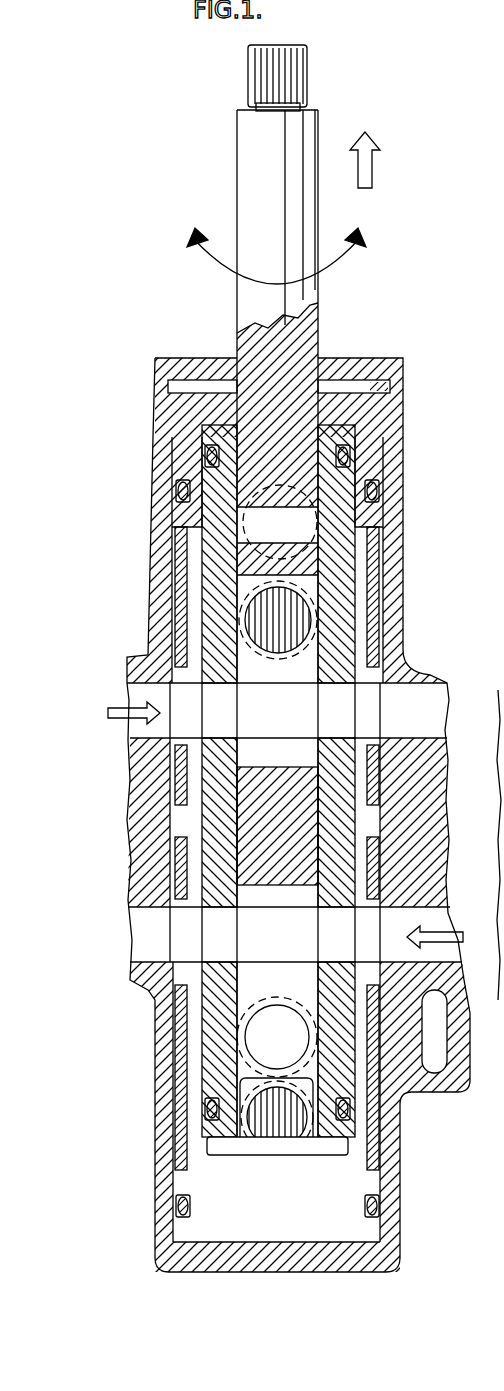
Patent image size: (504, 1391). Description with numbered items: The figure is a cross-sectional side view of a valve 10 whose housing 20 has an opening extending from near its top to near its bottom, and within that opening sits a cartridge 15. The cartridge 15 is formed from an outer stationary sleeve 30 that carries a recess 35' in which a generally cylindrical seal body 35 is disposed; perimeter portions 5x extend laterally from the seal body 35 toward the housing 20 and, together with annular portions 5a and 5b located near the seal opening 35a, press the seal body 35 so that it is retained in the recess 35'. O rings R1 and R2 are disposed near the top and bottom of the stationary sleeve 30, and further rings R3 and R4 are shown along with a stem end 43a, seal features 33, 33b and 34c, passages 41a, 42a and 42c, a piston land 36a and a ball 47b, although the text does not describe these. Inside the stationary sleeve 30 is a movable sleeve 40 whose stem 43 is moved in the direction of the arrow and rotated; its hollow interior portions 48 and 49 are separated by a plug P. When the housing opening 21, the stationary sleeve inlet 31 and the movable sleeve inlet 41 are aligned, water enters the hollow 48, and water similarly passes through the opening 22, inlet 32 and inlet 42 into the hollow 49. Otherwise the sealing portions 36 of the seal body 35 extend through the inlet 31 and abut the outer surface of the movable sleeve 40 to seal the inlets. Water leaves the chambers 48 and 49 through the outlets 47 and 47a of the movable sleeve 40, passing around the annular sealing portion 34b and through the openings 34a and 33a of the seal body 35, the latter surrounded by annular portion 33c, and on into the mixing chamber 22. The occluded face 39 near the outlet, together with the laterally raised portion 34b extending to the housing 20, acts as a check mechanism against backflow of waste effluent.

The valve 10 is at (176, 256).
The cartridge 15 is at (176, 354).
The housing 20 is at (155, 412).
The opening of the housing 21 is at (118, 697).
The opening of the housing 22 is at (150, 940).
The stationary sleeve 30 is at (372, 407).
The inlet of the stationary sleeve 31 is at (367, 713).
The inlet of the stationary sleeve 32 is at (400, 950).
The lower ball bearing 33 is at (205, 1160).
The opening of the seal 33a is at (265, 1060).
The bearing race 33b is at (255, 1090).
The annular portion 33c is at (278, 1130).
The opening of the seal 34a is at (290, 645).
The annular sealing portion 34b is at (242, 535).
The bearing race 34c is at (245, 615).
The cylindrical seal body 35 is at (391, 781).
The recess 35' is at (429, 521).
The opening of the seal 35a is at (395, 870).
The sealing portion 36 is at (425, 648).
The piston land 36a is at (277, 826).
The occluded face 39 is at (248, 592).
The movable sleeve 40 is at (378, 612).
The inlet of the movable sleeve 41 is at (334, 713).
The passage 41a is at (125, 736).
The inlet of the movable sleeve 42 is at (332, 940).
The passage 42a is at (150, 918).
The passage 42c is at (485, 1081).
The stem 43 is at (255, 152).
The splined end of shaft 43a is at (310, 72).
The outlet of the movable sleeve 47 is at (280, 522).
The outlet of the movable sleeve 47a is at (248, 1037).
The ball 47b is at (484, 1126).
The hollow interior portion 48 is at (276, 747).
The hollow interior portion 49 is at (276, 923).
The plug P is at (280, 808).
The annular portion 5a is at (428, 684).
The annular portion 5b is at (390, 892).
The perimeter portions 5x is at (168, 538).
The O ring R1 is at (378, 492).
The O ring R2 is at (372, 1203).
The seal ring R3 is at (360, 1108).
The seal ring R4 is at (350, 453).